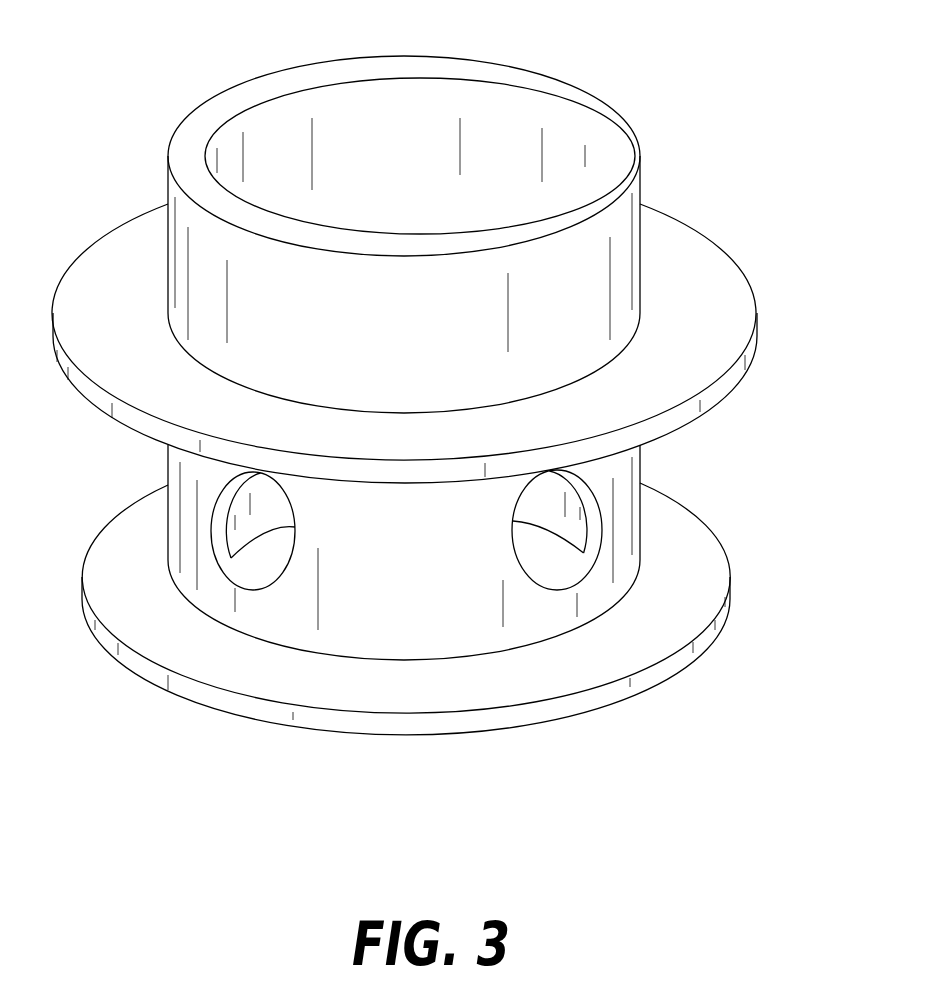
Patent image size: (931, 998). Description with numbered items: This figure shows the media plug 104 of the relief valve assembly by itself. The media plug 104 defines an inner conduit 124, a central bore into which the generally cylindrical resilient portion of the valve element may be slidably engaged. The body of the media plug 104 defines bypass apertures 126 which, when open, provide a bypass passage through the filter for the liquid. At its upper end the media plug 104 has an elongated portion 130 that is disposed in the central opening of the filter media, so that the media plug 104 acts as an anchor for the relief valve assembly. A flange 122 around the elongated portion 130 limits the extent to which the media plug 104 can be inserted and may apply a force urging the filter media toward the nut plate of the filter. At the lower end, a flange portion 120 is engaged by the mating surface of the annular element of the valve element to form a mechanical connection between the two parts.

The media plug 104 is at (410, 404).
The flange portion 120 is at (325, 719).
The flange 122 is at (728, 288).
The inner conduit 124 is at (421, 166).
The bypass apertures 126 is at (543, 553).
The elongated portion 130 is at (168, 200).